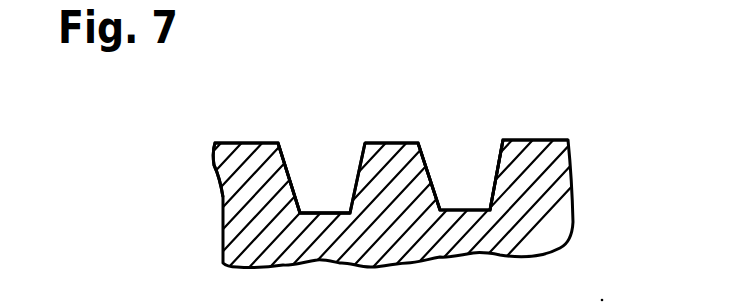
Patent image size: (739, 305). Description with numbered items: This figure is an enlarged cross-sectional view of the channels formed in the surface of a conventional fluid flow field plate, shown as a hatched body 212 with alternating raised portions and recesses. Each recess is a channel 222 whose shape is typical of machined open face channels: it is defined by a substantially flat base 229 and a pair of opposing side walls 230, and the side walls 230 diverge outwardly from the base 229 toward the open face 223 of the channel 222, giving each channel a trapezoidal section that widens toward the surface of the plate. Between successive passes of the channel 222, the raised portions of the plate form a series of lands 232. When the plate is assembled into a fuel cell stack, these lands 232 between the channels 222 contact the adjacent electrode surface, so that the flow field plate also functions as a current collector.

The body / base member 212 is at (540, 145).
The lands 232 is at (245, 143).
The channel 222 is at (323, 162).
The open face 223 is at (346, 148).
The side walls 230 is at (441, 188).
The base 229 is at (459, 192).